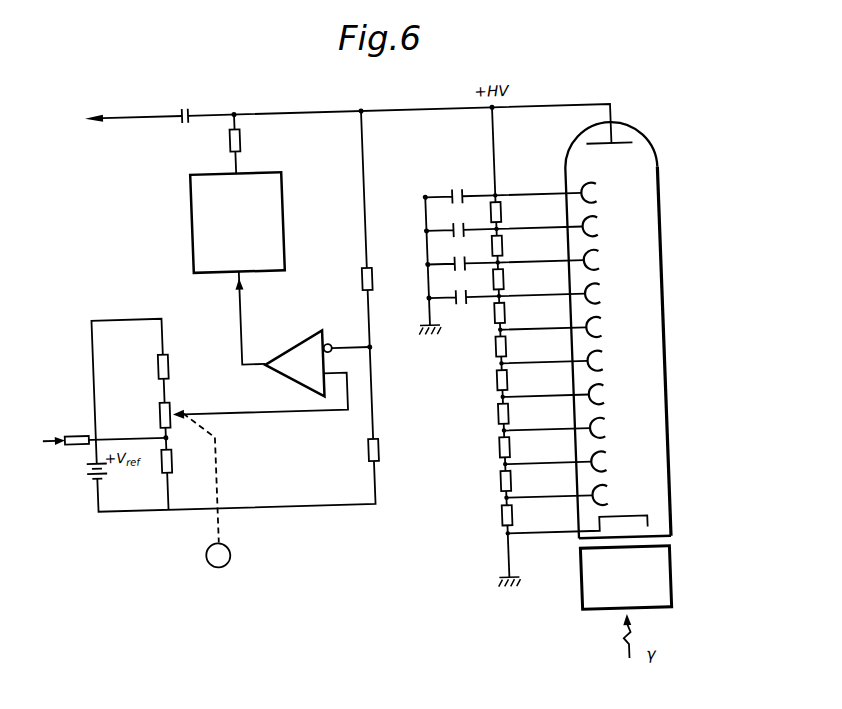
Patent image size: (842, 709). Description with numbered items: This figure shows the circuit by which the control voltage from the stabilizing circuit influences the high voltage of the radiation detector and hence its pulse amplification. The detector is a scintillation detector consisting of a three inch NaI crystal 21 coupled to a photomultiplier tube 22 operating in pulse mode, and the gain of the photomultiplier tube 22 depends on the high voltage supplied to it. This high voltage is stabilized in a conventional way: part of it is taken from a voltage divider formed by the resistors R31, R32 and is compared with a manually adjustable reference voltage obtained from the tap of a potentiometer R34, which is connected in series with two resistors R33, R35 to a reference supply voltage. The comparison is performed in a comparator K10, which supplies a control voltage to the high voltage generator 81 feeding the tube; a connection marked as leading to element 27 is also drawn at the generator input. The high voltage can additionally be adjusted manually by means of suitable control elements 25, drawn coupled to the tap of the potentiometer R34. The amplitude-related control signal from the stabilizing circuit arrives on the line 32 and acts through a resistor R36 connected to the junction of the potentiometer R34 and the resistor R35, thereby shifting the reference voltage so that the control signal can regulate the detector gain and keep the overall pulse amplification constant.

The connection to element 27 is at (347, 121).
The high voltage generator 81 is at (279, 221).
The comparator K10 is at (270, 343).
The resistor R31 is at (350, 281).
The resistor R32 is at (391, 451).
The resistor R33 is at (180, 367).
The potentiometer R34 is at (146, 416).
The resistor R35 is at (183, 462).
The resistor R36 is at (110, 431).
The line 32 is at (32, 436).
The control elements 25 is at (214, 551).
The photomultiplier tube 22 is at (655, 358).
The NaI crystal 21 is at (568, 596).